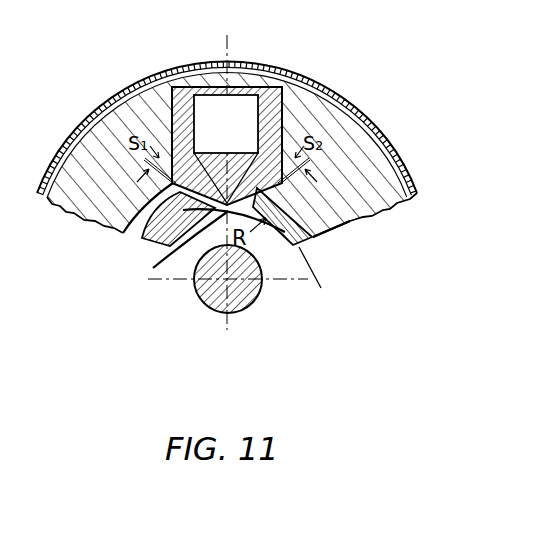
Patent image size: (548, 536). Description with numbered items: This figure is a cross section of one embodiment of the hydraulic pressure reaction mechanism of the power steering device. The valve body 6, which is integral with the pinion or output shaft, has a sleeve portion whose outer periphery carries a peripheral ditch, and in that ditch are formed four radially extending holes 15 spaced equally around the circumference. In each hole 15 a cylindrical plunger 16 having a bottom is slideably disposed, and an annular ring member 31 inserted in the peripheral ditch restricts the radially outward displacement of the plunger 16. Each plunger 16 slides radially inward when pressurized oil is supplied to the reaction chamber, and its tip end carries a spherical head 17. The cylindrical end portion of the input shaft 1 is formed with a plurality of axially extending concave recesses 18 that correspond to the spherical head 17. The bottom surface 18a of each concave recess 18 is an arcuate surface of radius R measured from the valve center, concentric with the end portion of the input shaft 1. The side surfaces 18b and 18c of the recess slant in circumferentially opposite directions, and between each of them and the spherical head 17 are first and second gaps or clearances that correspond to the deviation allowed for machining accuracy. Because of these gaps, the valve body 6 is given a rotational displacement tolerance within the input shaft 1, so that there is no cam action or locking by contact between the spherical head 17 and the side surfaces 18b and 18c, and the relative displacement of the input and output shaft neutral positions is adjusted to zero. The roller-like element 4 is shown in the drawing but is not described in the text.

The annular ring member 31 is at (110, 100).
The valve body 6 is at (363, 162).
The spherical head 17 is at (358, 220).
The hole 15 is at (283, 112).
The plunger 16 is at (268, 100).
The concave recess 18 is at (180, 362).
The bottom surface 18a is at (152, 268).
The side surface 18b is at (143, 240).
The side surface 18c is at (212, 220).
The input shaft 1 is at (318, 278).
The roller 4 is at (244, 296).